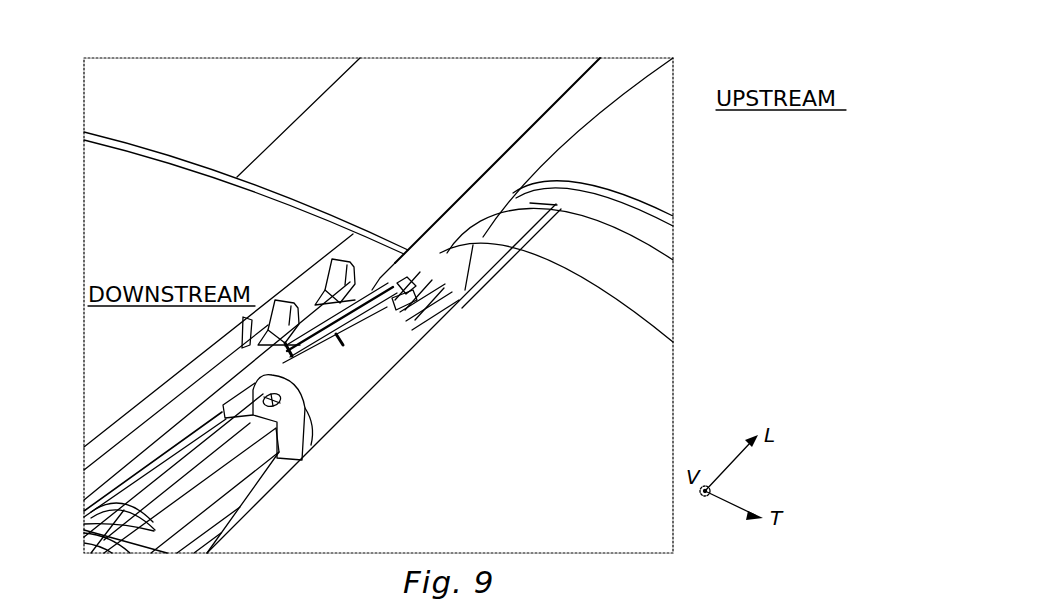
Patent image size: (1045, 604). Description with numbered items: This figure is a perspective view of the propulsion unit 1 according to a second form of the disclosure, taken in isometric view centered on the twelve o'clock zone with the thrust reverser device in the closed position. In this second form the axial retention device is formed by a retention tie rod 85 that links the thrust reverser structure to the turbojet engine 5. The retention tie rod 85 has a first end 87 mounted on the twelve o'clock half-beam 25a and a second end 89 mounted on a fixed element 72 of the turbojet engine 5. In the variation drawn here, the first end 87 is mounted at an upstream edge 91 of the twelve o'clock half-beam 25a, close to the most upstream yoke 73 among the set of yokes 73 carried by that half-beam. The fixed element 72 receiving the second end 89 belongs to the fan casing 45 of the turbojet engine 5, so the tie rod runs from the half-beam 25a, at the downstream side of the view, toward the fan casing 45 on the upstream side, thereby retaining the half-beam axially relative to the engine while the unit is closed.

The propulsion unit 1 is at (150, 42).
The turbojet engine 5 is at (428, 336).
The twelve o'clock half-beam 25a is at (190, 440).
The fan casing 45 is at (442, 320).
The fixed element 72 is at (418, 350).
The yoke 73 is at (108, 492).
The retention tie rod 85 is at (363, 373).
The first end 87 is at (320, 312).
The second end 89 is at (395, 262).
The upstream edge 91 is at (312, 446).